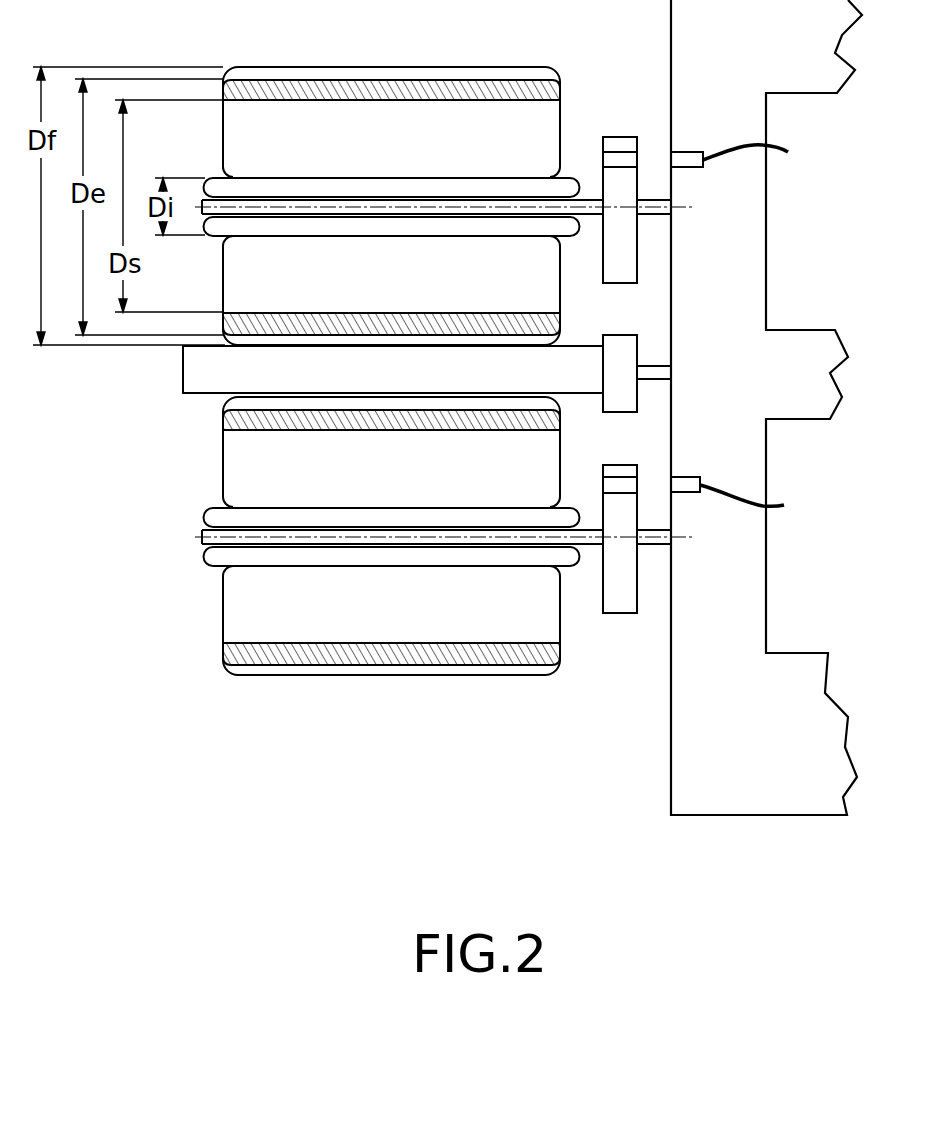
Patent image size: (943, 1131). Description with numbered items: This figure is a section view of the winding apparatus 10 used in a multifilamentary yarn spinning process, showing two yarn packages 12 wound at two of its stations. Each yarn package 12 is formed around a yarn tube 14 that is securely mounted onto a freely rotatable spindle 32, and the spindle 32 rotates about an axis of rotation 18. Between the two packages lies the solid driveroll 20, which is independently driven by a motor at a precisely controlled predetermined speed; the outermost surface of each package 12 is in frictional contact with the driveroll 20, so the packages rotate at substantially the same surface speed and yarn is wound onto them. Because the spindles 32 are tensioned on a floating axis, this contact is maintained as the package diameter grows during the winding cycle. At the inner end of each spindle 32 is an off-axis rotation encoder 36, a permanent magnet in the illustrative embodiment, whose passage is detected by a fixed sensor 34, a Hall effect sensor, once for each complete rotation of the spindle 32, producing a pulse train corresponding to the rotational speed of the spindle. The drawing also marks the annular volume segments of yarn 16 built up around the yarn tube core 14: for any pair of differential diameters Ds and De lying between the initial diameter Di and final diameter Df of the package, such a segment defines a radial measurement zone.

The winding apparatus 10 is at (760, 760).
The yarn package 12 is at (246, 121).
The yarn tube 14 is at (222, 187).
The annular volume segments of yarn 16 is at (507, 80).
The axis of rotation 18 is at (684, 212).
The driveroll 20 is at (196, 368).
The spindle 32 is at (590, 197).
The fixed sensor 34 is at (704, 165).
The off-axis rotation encoder 36 is at (617, 160).